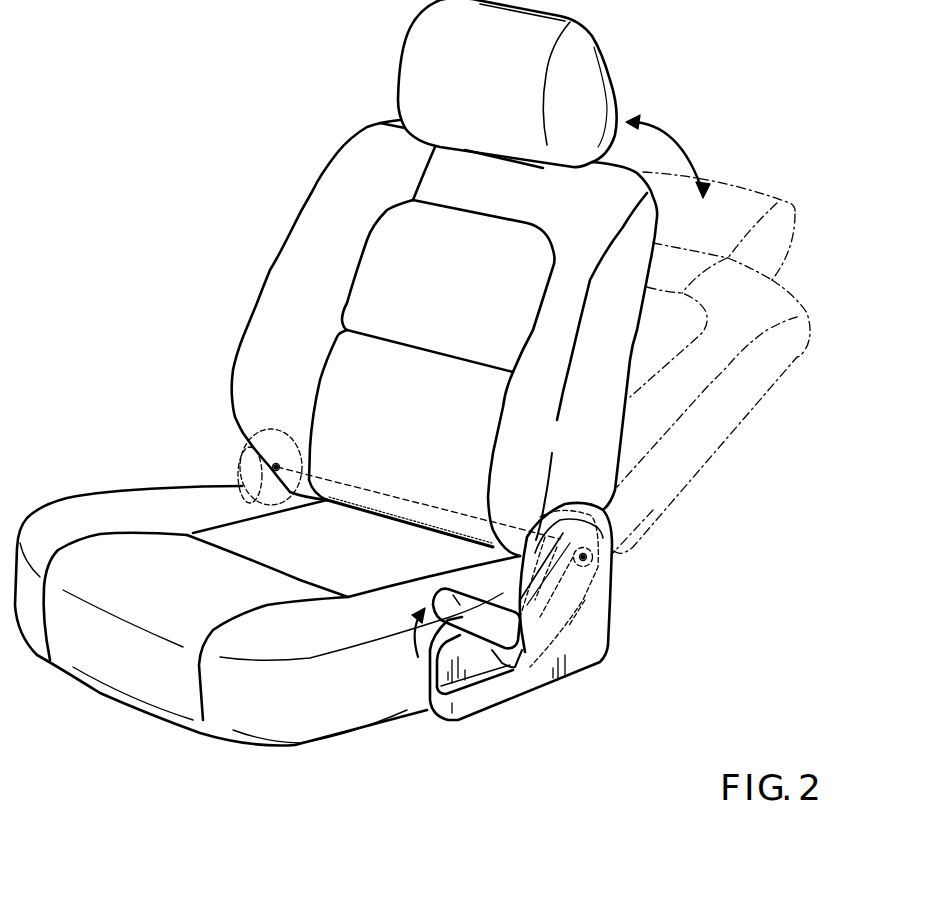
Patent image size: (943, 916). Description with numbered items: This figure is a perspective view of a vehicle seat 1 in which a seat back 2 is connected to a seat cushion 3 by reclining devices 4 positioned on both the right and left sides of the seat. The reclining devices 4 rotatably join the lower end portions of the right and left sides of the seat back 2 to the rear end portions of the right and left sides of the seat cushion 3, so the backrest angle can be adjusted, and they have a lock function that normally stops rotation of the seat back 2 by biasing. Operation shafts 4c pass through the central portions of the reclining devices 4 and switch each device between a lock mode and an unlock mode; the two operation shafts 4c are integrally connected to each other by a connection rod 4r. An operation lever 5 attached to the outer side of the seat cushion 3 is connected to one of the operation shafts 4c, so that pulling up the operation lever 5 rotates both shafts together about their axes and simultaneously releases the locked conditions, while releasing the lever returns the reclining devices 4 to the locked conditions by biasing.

The vehicle seat 1 is at (274, 147).
The seat back 2 is at (320, 260).
The seat cushion 3 is at (98, 520).
The reclining device 4 is at (277, 436).
The operation shaft 4c is at (279, 466).
The connection rod 4r is at (397, 500).
The operation lever 5 is at (452, 593).